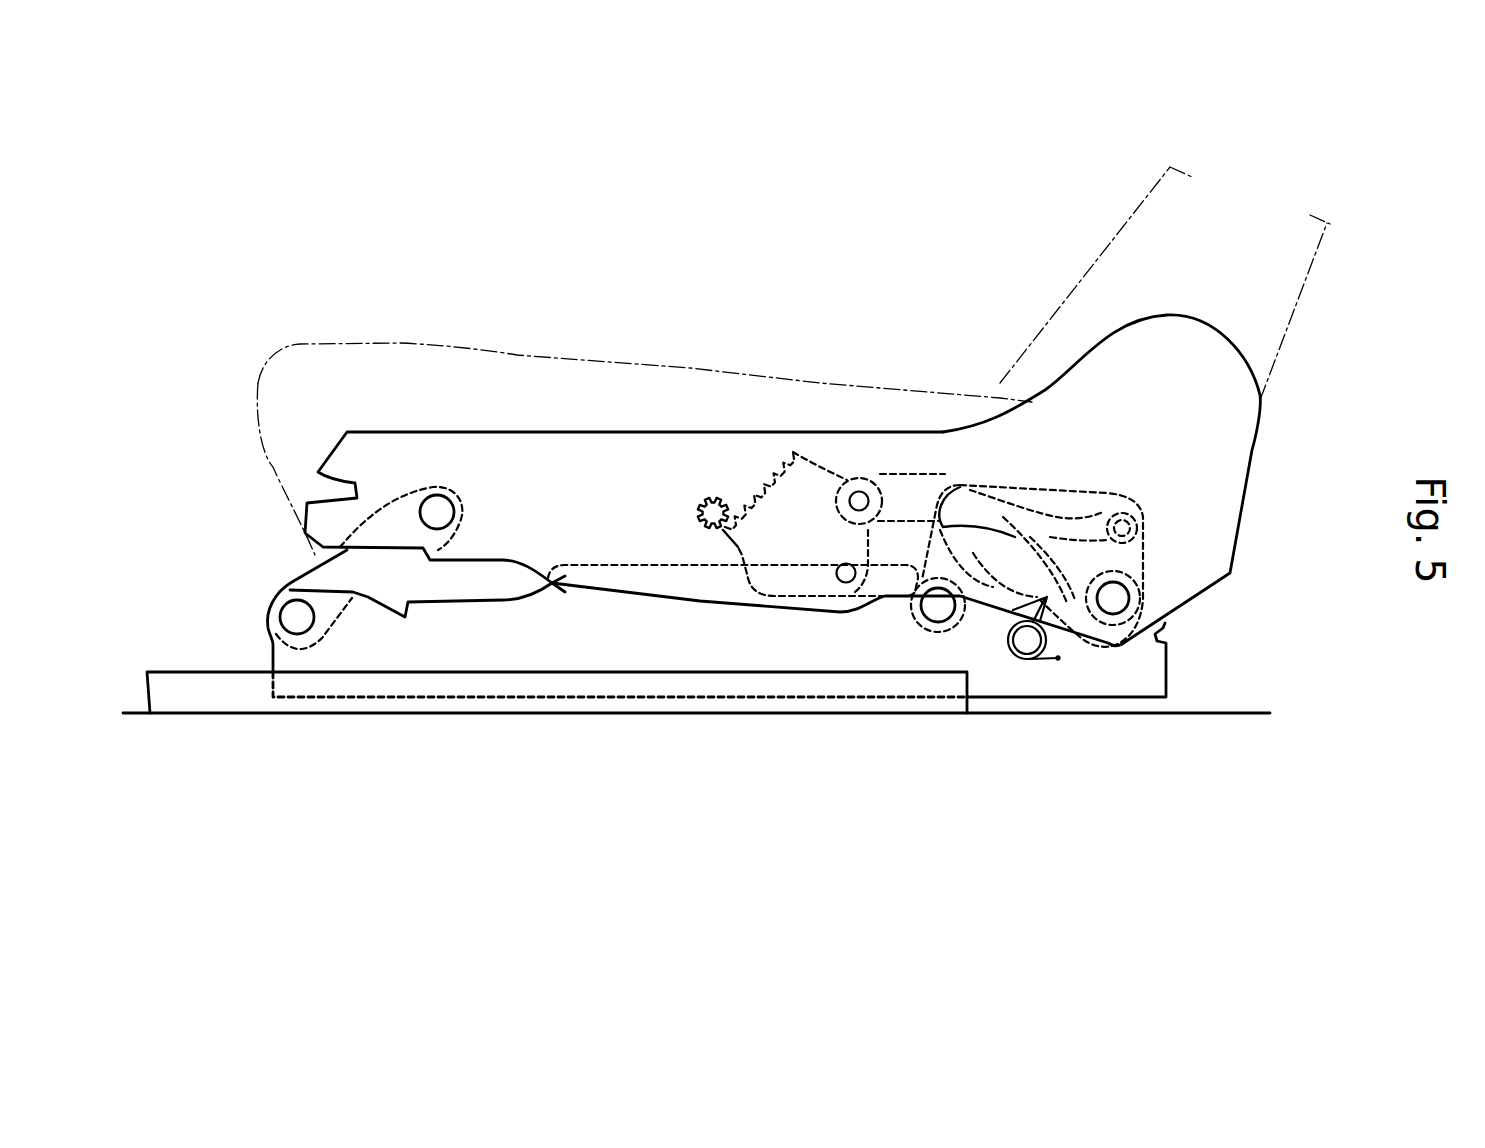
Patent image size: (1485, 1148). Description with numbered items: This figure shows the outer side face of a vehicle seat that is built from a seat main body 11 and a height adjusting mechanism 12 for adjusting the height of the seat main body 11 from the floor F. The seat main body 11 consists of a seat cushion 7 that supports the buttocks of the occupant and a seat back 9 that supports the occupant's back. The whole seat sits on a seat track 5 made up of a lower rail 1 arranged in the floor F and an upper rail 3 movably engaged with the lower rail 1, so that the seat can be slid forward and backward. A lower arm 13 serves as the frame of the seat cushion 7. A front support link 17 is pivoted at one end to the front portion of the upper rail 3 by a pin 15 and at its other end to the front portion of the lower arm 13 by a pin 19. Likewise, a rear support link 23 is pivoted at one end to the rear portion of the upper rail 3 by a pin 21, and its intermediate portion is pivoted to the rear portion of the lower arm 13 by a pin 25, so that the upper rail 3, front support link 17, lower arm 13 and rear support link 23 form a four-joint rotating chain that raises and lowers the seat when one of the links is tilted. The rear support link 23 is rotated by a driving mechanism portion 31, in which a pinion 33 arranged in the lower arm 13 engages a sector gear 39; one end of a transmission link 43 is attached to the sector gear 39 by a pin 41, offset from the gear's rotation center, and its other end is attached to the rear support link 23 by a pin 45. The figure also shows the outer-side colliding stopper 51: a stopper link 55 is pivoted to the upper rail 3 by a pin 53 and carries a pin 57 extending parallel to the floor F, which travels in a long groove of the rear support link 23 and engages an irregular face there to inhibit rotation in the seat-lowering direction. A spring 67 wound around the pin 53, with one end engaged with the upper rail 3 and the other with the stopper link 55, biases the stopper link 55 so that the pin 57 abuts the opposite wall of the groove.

The lower rail 1 is at (947, 687).
The upper rail 3 is at (973, 652).
The seat track 5 is at (656, 750).
The seat cushion 7 is at (1005, 392).
The seat back 9 is at (1133, 240).
The seat main body 11 is at (1136, 405).
The height adjusting mechanism 12 is at (292, 573).
The lower arm 13 is at (525, 452).
The pin 15 is at (287, 617).
The front support link 17 is at (332, 570).
The pin 19 is at (432, 503).
The pin 21 is at (938, 610).
The rear support link 23 is at (1143, 573).
The pin 25 is at (1113, 598).
The driving mechanism portion 31 is at (705, 475).
The pinion 33 is at (713, 533).
The sector gear 39 is at (817, 597).
The pin 41 is at (853, 478).
The transmission link 43 is at (932, 473).
The pin 45 is at (1137, 530).
The colliding stopper 51 is at (913, 463).
The pin 53 is at (1027, 645).
The stopper link 55 is at (997, 607).
The pin 57 is at (951, 484).
The spring 67 is at (1053, 660).
The floor F is at (1240, 713).